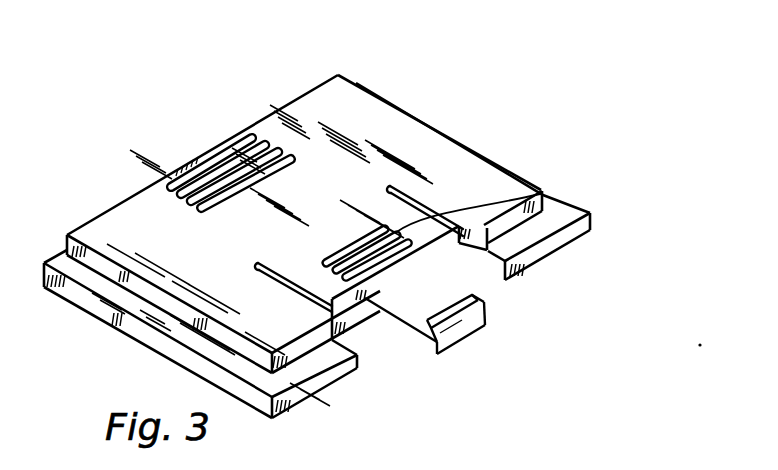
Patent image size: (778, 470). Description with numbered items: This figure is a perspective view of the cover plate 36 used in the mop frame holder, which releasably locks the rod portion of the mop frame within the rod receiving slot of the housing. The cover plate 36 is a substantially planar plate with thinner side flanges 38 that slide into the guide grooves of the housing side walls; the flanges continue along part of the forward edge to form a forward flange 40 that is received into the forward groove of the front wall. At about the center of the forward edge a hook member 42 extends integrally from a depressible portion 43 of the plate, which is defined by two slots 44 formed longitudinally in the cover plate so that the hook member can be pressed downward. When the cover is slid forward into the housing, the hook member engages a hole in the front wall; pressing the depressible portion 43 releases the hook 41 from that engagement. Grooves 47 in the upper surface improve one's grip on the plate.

The cover plate 36 is at (594, 178).
The side flanges 38 is at (182, 333).
The forward flange 40 is at (313, 367).
The hook 41 is at (487, 306).
The hook member 42 is at (405, 326).
The depressible portion 43 is at (347, 247).
The slots 44 is at (281, 264).
The grooves 47 is at (258, 158).